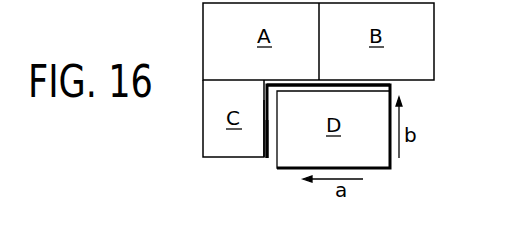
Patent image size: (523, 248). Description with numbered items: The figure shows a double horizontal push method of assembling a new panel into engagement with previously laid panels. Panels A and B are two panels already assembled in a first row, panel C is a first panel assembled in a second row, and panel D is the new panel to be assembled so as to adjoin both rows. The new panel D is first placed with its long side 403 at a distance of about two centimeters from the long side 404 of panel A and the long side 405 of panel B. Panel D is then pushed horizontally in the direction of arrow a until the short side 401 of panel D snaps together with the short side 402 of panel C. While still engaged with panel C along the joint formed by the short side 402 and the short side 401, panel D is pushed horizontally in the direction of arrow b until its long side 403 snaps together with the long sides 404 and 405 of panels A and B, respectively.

The short side of panel D 401 is at (271, 159).
The short side of panel C 402 is at (264, 133).
The long side of panel D 403 is at (373, 88).
The long side of panel A 404 is at (281, 86).
The long side of panel B 405 is at (424, 82).